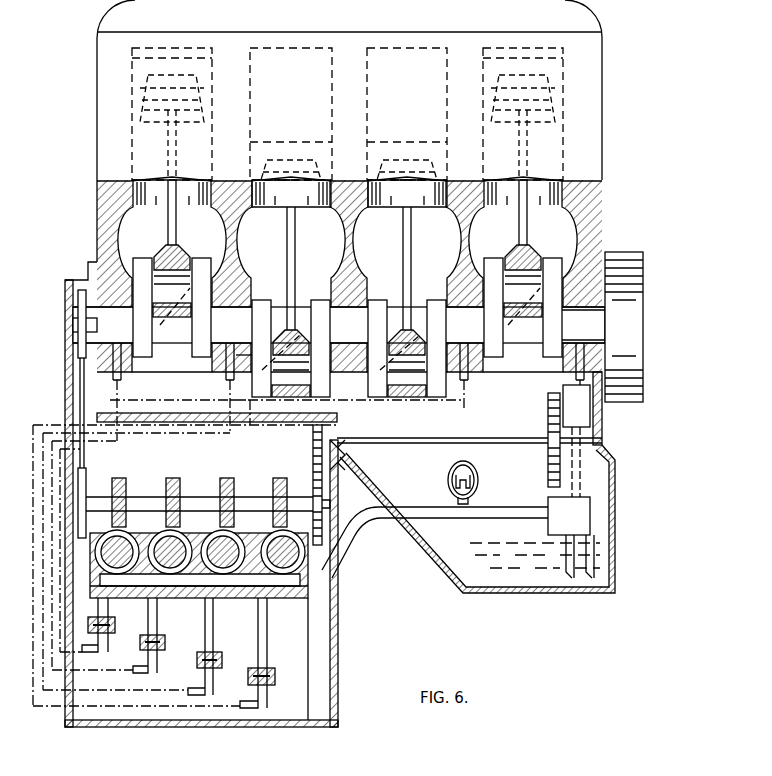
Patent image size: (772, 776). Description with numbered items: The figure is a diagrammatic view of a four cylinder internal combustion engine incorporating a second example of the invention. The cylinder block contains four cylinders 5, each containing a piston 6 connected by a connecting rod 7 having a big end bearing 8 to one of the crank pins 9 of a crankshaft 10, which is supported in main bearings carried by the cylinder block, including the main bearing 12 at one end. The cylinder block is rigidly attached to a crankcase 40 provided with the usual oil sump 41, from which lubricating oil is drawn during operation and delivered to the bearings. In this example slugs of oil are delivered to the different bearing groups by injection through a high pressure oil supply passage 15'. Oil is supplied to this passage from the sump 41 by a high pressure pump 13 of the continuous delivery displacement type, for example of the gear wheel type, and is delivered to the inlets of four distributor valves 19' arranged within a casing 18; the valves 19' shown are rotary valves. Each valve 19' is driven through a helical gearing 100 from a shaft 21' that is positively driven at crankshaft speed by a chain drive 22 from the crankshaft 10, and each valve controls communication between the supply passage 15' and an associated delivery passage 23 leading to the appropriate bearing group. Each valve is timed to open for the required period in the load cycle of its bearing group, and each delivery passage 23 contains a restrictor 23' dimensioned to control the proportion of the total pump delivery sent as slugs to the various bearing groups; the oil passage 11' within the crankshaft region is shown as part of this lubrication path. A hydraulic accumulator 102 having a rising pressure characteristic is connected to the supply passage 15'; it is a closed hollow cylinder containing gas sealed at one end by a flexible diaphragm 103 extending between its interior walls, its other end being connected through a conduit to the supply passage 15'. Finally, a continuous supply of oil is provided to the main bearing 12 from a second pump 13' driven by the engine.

The cylinder 5 is at (133, 155).
The piston 6 is at (134, 77).
The connecting rod 7 is at (177, 230).
The big end bearing 8 is at (176, 330).
The crank pin 9 is at (253, 380).
The crankshaft 10 is at (562, 330).
The oil passage 11' is at (217, 378).
The main bearing 12 is at (590, 305).
The high pressure pump 13 is at (594, 537).
The second pump 13' is at (598, 441).
The high pressure oil supply passage 15' is at (441, 485).
The casing 18 is at (338, 688).
The distributor valve 19' is at (234, 526).
The shaft 21' is at (211, 485).
The chain drive 22 is at (80, 395).
The delivery passage 23 is at (308, 525).
The restrictor 23' is at (196, 645).
The crankcase 40 is at (615, 495).
The oil sump 41 is at (530, 593).
The helical gearing 100 is at (118, 470).
The hydraulic accumulator 102 is at (478, 472).
The flexible diaphragm 103 is at (450, 472).